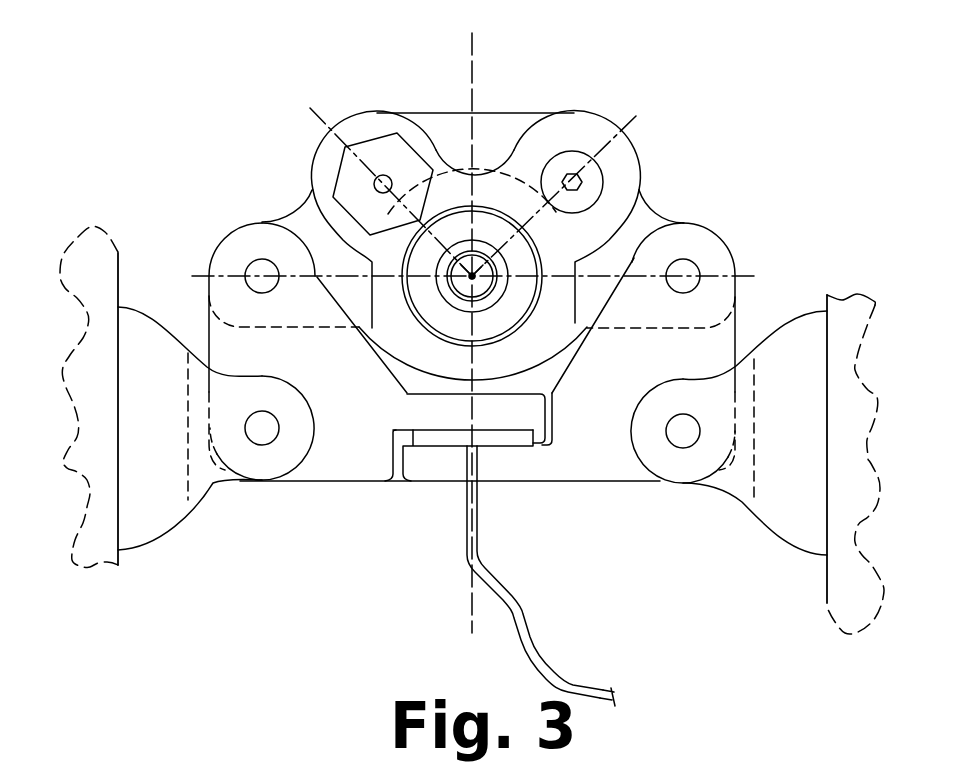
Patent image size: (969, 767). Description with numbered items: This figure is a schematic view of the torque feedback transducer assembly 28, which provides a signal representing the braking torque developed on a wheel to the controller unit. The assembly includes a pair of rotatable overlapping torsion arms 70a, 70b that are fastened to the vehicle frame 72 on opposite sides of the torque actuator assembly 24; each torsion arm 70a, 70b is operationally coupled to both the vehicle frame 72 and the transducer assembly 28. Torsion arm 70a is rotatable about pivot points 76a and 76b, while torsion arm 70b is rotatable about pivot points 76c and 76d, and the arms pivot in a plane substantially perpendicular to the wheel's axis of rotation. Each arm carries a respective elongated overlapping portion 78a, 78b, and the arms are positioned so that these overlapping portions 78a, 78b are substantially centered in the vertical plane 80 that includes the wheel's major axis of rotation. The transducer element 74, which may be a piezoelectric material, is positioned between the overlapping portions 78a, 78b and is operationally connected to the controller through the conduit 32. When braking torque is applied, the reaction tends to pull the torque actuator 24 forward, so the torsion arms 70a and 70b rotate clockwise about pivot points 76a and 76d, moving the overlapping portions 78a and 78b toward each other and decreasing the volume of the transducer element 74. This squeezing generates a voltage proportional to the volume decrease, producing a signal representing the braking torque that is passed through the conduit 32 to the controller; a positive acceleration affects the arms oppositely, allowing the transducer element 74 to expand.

The torque feedback transducer assembly 28 is at (196, 112).
The torque actuator assembly 24 is at (490, 127).
The conduit 32 is at (557, 690).
The torsion arm 70a is at (343, 465).
The torsion arm 70b is at (722, 341).
The vehicle frame 72 is at (117, 420).
The transducer element 74 is at (520, 437).
The pivot point 76a is at (255, 434).
The pivot point 76b is at (260, 262).
The pivot point 76c is at (690, 274).
The pivot point 76d is at (683, 436).
The overlapping portion 78a is at (527, 407).
The overlapping portion 78b is at (420, 473).
The vertical plane 80 is at (468, 620).